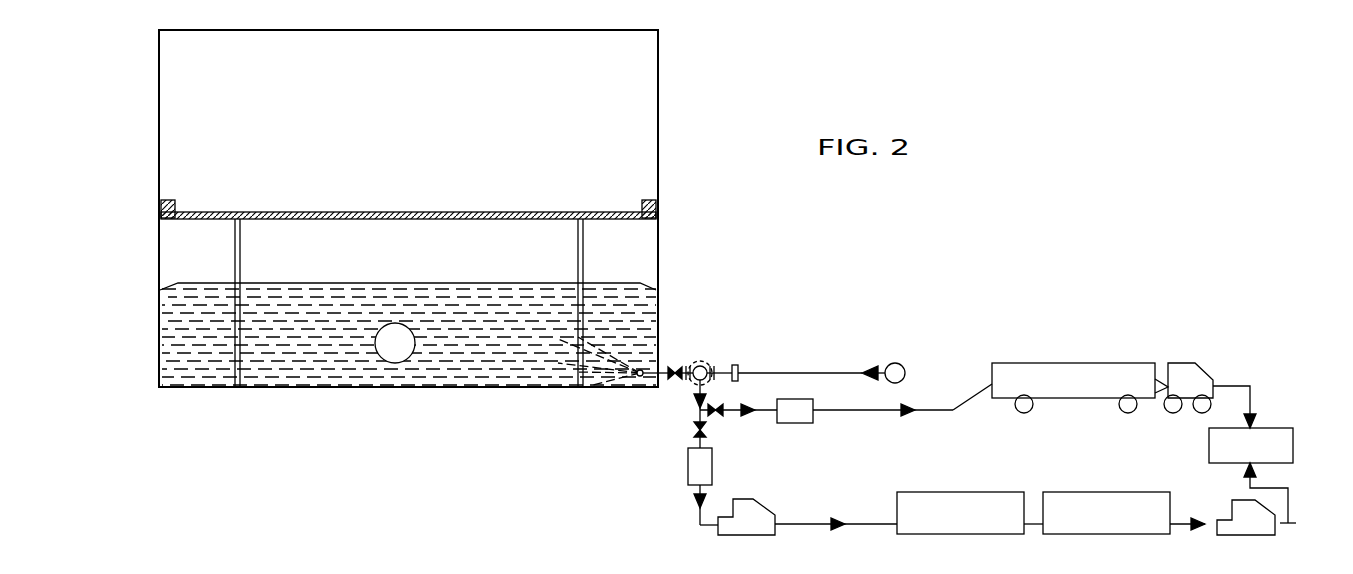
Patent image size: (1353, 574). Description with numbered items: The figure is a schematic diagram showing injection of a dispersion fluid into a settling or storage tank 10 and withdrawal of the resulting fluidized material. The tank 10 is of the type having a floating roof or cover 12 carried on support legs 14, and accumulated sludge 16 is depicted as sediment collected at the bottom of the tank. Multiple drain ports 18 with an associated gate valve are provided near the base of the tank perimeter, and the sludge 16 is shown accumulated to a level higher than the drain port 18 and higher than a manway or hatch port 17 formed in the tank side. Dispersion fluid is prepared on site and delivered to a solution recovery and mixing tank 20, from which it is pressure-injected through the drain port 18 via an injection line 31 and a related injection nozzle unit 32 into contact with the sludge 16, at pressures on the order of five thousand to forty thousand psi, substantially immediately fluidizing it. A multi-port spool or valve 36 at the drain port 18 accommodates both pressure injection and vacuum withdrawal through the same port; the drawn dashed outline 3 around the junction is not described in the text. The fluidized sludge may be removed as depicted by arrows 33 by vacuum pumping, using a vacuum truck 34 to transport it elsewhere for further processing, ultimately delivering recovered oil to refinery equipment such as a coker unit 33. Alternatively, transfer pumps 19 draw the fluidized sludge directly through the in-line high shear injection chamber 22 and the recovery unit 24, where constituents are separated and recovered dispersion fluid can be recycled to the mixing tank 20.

The tank 10 is at (444, 208).
The floating roof or cover 12 is at (408, 196).
The support legs 14 is at (441, 303).
The sludge 16 is at (408, 313).
The manway or hatch port 17 is at (390, 380).
The drain port 18 is at (688, 313).
The pump 3 is at (721, 334).
The multi-port spool or valve 36 is at (743, 344).
The injection line 31 is at (811, 351).
The solution recovery and mixing tank 20 is at (927, 354).
The vacuum truck 34 is at (1102, 367).
The coker unit 33 is at (1276, 429).
The in-line high shear injection chamber 22 is at (967, 490).
The recovery unit 24 is at (1106, 490).
The transfer pumps 19 is at (996, 522).
The injection nozzle unit 32 is at (634, 398).